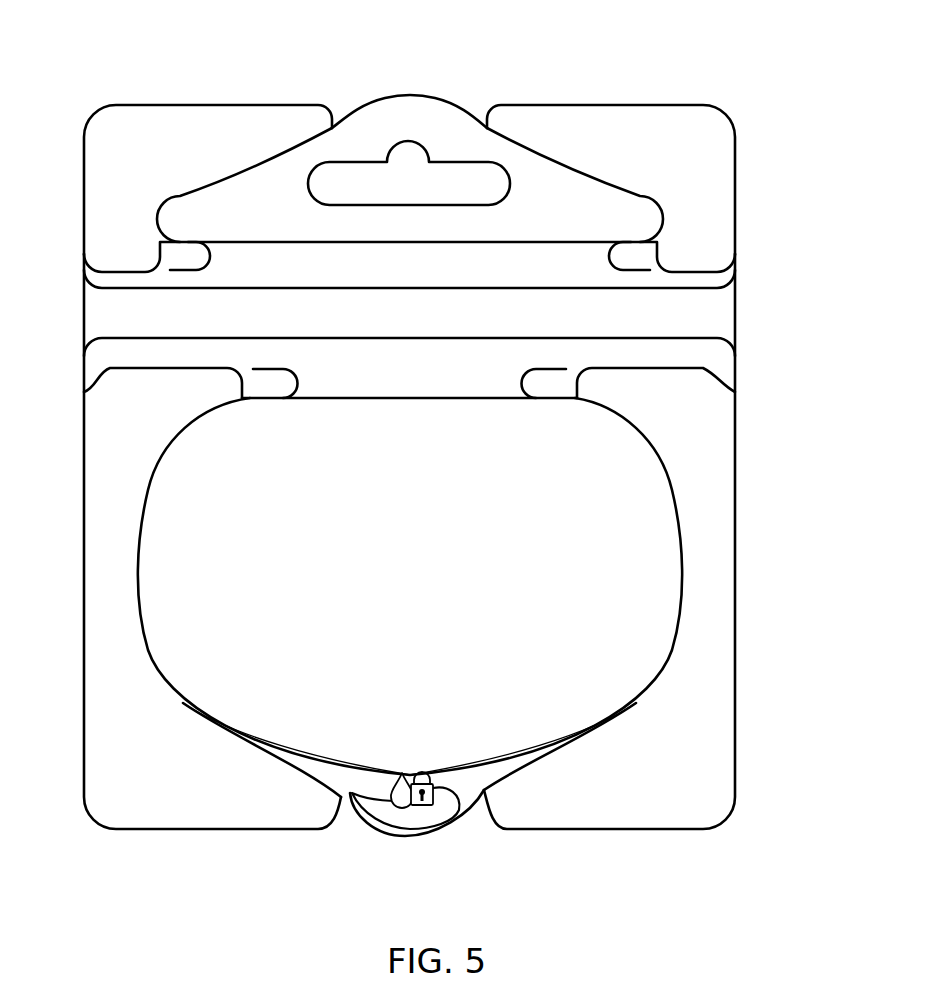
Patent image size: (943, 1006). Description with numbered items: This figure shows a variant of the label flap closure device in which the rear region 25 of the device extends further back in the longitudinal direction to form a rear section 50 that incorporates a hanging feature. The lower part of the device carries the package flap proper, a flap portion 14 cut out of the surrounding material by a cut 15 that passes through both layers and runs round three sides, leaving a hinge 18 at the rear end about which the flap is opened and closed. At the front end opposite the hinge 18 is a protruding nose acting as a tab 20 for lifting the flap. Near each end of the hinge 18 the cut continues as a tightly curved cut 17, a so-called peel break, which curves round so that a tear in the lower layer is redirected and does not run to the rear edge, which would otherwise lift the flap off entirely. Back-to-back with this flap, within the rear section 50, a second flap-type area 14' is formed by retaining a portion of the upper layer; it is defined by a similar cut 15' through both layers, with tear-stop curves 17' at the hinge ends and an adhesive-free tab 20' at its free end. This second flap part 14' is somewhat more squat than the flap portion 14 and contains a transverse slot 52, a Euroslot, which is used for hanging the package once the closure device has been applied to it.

The rear section 50 is at (116, 80).
The adhesive-free tab 20' is at (409, 81).
The transverse slot 52 is at (460, 183).
The second flap-type area 14' is at (399, 146).
The cut 15' is at (647, 185).
The tear-stop curves 17' is at (450, 238).
The single-layer rear region 25 is at (707, 324).
The tightly curved cut 17 is at (409, 348).
The hinge 18 is at (378, 399).
The flap portion 14 is at (476, 586).
The cut 15 is at (498, 669).
The tab 20 is at (417, 836).